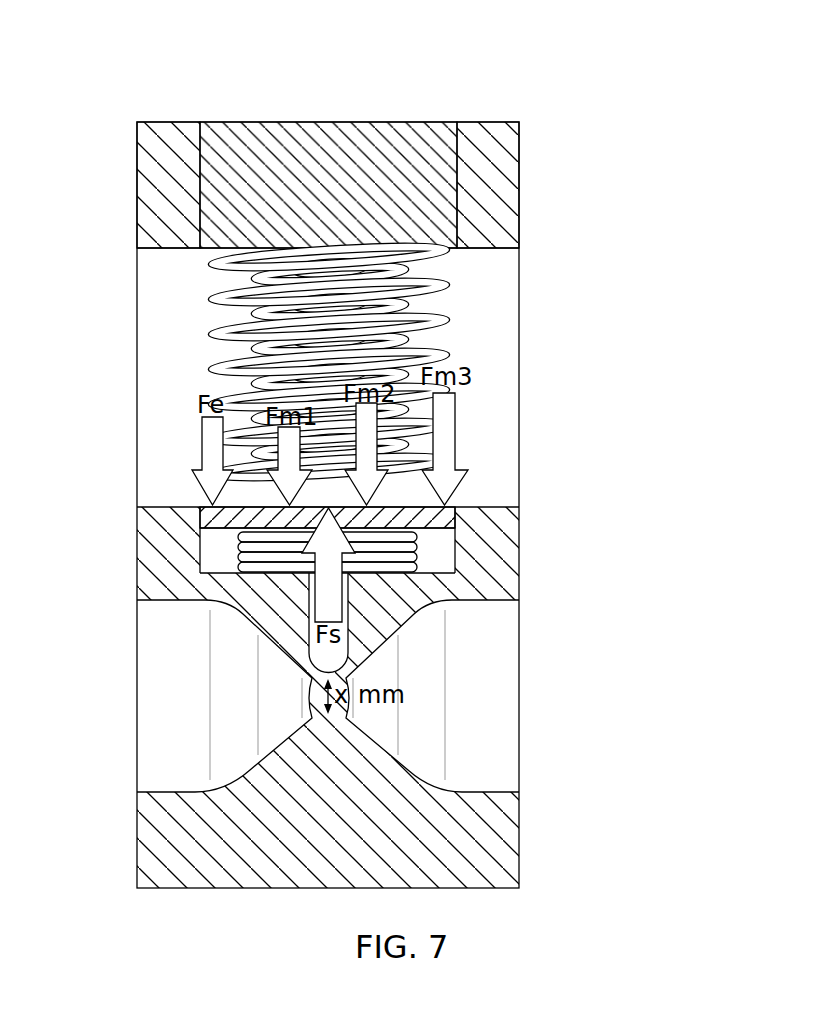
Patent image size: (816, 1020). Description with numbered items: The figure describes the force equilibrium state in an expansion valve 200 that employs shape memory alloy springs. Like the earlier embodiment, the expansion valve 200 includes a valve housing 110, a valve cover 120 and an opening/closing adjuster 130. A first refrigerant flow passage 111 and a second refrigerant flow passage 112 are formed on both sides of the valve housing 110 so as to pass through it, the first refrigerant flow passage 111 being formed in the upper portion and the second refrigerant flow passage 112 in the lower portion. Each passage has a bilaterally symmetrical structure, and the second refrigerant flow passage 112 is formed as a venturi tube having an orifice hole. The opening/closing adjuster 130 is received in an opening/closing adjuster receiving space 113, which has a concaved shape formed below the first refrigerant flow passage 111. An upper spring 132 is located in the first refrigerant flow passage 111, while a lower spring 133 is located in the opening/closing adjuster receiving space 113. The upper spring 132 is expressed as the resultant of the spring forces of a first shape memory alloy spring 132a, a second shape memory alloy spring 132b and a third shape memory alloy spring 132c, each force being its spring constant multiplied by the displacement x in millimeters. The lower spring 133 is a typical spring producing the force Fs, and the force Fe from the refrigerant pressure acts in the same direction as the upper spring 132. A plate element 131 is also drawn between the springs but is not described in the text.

The expansion valve 200 is at (510, 100).
The valve housing 110 is at (157, 142).
The first refrigerant flow passage 111 is at (167, 248).
The second refrigerant flow passage 112 is at (167, 600).
The opening/closing adjuster receiving space 113 is at (448, 562).
The valve cover 120 is at (323, 140).
The opening/closing adjuster 130 is at (490, 408).
The support plate 131 is at (455, 520).
The upper spring 132 is at (460, 362).
The first shape memory alloy spring 132a is at (400, 295).
The second shape memory alloy spring 132b is at (400, 338).
The third shape memory alloy spring 132c is at (443, 352).
The lower spring 133 is at (435, 537).